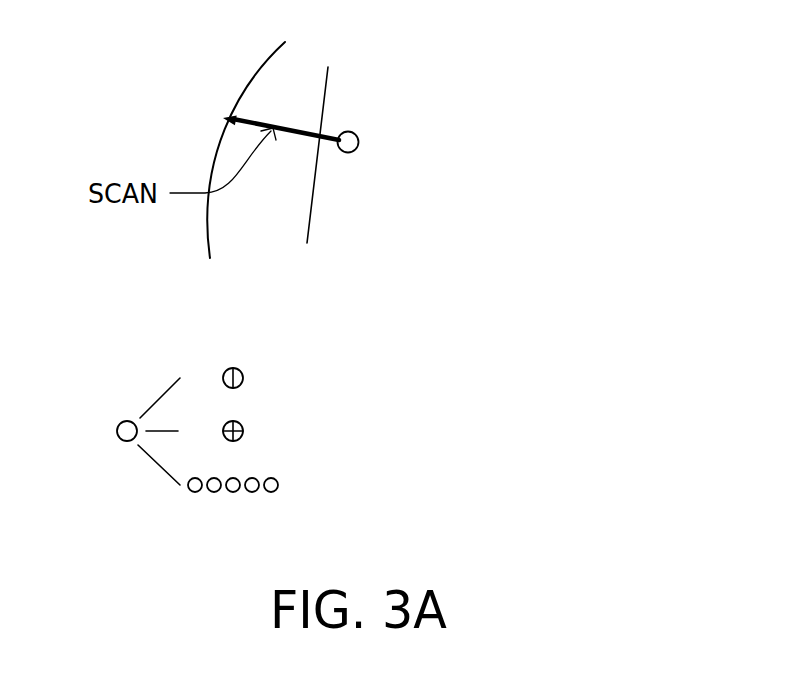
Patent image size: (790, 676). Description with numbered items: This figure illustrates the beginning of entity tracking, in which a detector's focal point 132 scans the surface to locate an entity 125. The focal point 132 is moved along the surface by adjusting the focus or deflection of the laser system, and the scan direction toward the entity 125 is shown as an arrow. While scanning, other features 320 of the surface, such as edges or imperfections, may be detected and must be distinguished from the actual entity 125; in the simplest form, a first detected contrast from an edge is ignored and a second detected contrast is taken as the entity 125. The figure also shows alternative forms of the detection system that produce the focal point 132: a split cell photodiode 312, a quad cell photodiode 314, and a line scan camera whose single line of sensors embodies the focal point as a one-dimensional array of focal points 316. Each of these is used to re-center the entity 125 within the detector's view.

The entity 125 is at (242, 90).
The feature 320 is at (327, 87).
The focal point 132 is at (355, 134).
The split cell photodiode 312 is at (243, 376).
The quad cell photodiode 314 is at (243, 430).
The array of focal points 316 is at (280, 487).